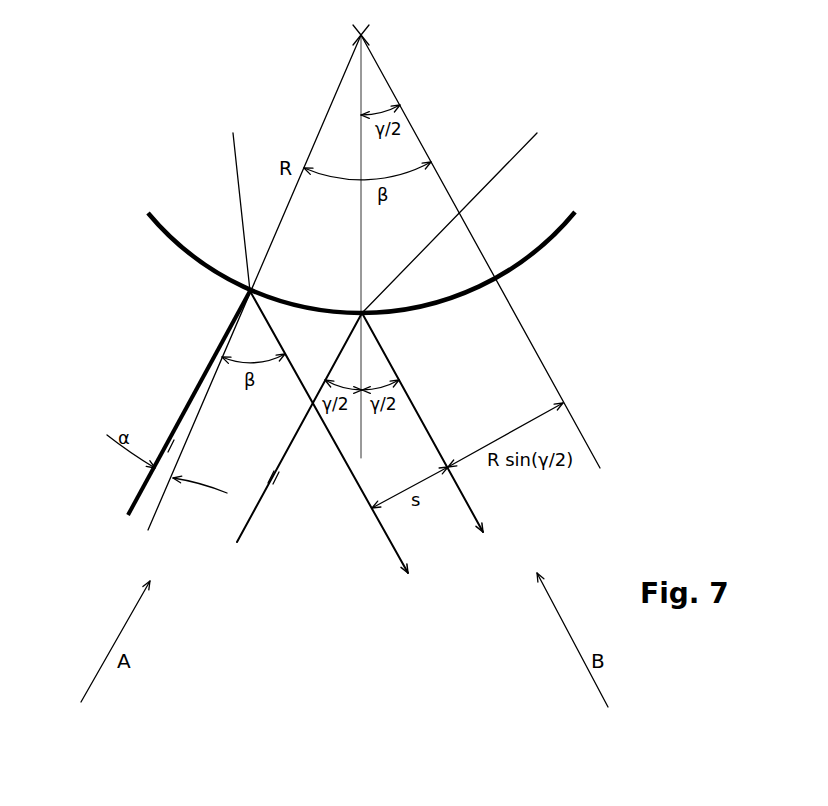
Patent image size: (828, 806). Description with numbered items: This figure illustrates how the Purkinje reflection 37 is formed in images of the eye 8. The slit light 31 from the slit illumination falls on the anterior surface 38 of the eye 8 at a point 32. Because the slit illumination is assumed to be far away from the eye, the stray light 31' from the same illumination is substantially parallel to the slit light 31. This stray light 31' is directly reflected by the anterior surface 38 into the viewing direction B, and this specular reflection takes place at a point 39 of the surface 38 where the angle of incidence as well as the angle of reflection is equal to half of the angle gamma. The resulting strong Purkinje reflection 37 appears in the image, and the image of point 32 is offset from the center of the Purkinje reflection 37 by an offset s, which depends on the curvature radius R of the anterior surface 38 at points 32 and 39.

The eye 8 is at (133, 235).
The slit light 31 is at (183, 403).
The stray light 31' is at (299, 438).
The point 32 is at (233, 133).
The Purkinje reflection 37 is at (432, 437).
The anterior surface 38 is at (547, 245).
The point 39 is at (537, 133).